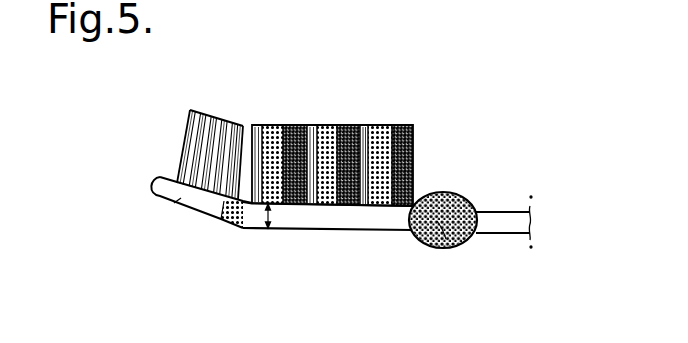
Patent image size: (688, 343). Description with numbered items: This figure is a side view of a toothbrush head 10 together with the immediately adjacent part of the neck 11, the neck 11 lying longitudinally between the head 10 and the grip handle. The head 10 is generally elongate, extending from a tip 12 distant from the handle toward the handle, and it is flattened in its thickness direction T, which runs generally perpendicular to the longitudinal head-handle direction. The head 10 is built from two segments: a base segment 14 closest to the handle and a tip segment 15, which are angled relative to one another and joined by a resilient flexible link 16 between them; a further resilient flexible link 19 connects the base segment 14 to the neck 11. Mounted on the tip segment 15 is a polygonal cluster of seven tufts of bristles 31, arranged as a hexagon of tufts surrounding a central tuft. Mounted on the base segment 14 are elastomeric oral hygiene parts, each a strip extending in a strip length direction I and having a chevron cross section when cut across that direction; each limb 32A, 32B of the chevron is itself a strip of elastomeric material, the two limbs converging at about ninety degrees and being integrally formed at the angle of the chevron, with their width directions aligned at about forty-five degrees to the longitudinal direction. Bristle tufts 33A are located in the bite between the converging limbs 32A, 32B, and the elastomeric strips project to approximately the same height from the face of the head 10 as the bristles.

The toothbrush head 10 is at (203, 250).
The neck 11 is at (497, 215).
The tip 12 is at (157, 184).
The base segment 14 is at (338, 217).
The tip segment 15 is at (168, 210).
The resilient flexible link 16 is at (227, 225).
The resilient flexible link 19 is at (448, 248).
The tufts of bristles 31 is at (190, 110).
The limb of the chevron 32A is at (267, 126).
The limb of the chevron 32B is at (292, 126).
The bristle tufts 33A is at (362, 126).
The strip length direction I is at (402, 63).
The thickness direction T is at (278, 229).